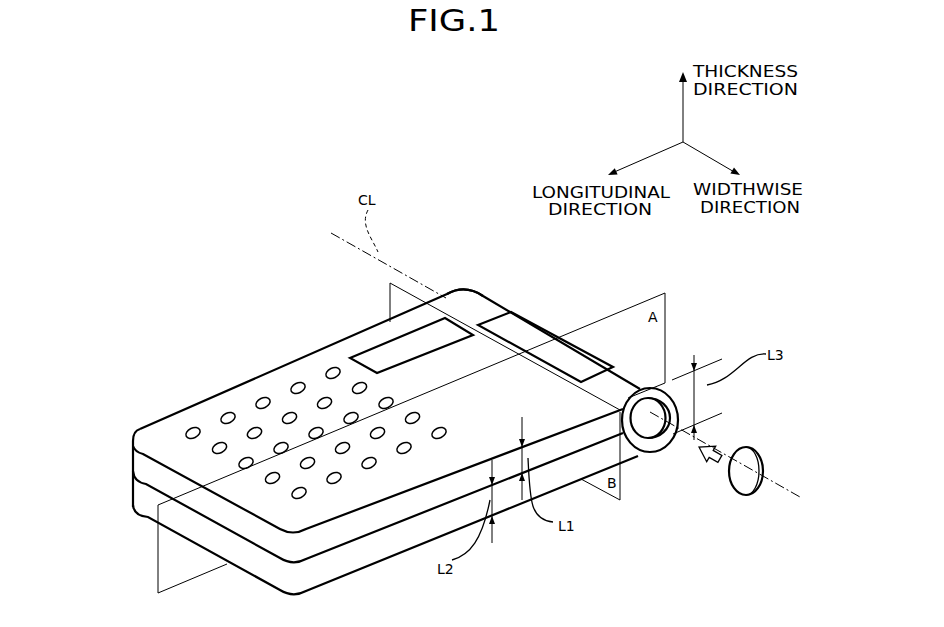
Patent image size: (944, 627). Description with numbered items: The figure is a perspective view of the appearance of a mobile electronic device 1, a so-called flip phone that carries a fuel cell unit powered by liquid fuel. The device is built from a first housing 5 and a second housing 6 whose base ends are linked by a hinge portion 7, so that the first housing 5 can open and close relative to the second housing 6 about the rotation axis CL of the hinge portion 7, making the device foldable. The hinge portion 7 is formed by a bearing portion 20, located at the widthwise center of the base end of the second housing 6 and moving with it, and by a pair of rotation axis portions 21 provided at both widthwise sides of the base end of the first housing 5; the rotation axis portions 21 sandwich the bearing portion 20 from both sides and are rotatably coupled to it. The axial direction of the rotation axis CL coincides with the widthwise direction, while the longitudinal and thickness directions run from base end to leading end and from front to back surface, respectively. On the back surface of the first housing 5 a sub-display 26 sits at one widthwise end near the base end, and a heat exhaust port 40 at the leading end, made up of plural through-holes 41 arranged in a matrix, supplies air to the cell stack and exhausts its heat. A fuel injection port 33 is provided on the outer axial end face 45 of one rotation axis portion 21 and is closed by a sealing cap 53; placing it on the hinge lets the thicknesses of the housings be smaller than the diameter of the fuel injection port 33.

The mobile electronic device 1 is at (473, 170).
The first housing 5 is at (133, 443).
The second housing 6 is at (133, 487).
The hinge portion 7 is at (662, 467).
The bearing portion 20 is at (524, 327).
The rotation axis portion 21 is at (470, 296).
The sub-display 26 is at (380, 344).
The fuel injection port 33 is at (677, 402).
The heat exhaust port 40 is at (316, 391).
The through-hole 41 is at (333, 368).
The end face 45 is at (636, 452).
The sealing cap 53 is at (749, 496).